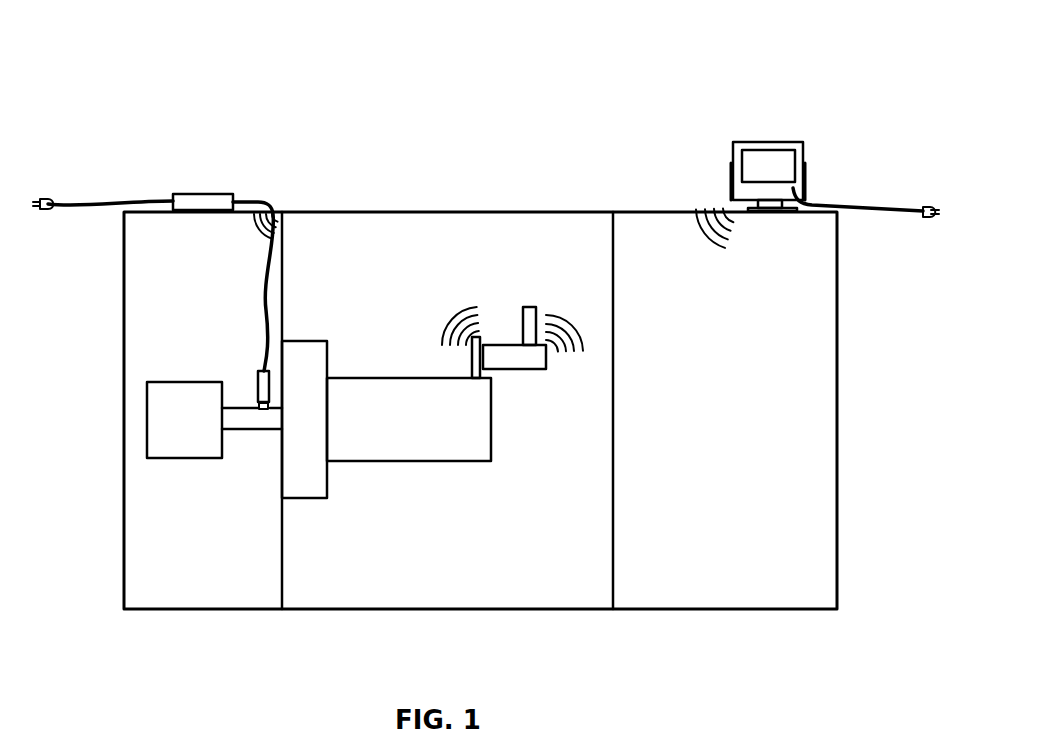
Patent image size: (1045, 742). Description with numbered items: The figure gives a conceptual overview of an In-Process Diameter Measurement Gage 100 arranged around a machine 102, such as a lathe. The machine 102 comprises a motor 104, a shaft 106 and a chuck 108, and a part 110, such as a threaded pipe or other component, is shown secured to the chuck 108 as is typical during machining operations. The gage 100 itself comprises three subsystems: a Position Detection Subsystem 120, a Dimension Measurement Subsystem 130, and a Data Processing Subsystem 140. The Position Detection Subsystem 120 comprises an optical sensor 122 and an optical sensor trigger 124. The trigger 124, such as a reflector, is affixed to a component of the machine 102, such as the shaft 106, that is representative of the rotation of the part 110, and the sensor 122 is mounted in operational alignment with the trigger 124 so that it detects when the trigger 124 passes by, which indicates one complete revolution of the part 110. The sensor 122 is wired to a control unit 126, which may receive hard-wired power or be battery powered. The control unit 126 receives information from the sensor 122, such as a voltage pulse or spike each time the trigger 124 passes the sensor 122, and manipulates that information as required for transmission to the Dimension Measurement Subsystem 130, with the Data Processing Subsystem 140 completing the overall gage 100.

The In-Process Diameter Measurement Gage 100 is at (706, 39).
The machine 102 is at (405, 611).
The motor 104 is at (147, 411).
The shaft 106 is at (240, 430).
The chuck 108 is at (304, 498).
The part 110 is at (432, 430).
The Position Detection Subsystem 120 is at (286, 192).
The optical sensor 122 is at (258, 387).
The optical sensor trigger 124 is at (263, 410).
The control unit 126 is at (213, 194).
The Dimension Measurement Subsystem 130 is at (518, 282).
The Data Processing Subsystem 140 is at (784, 119).